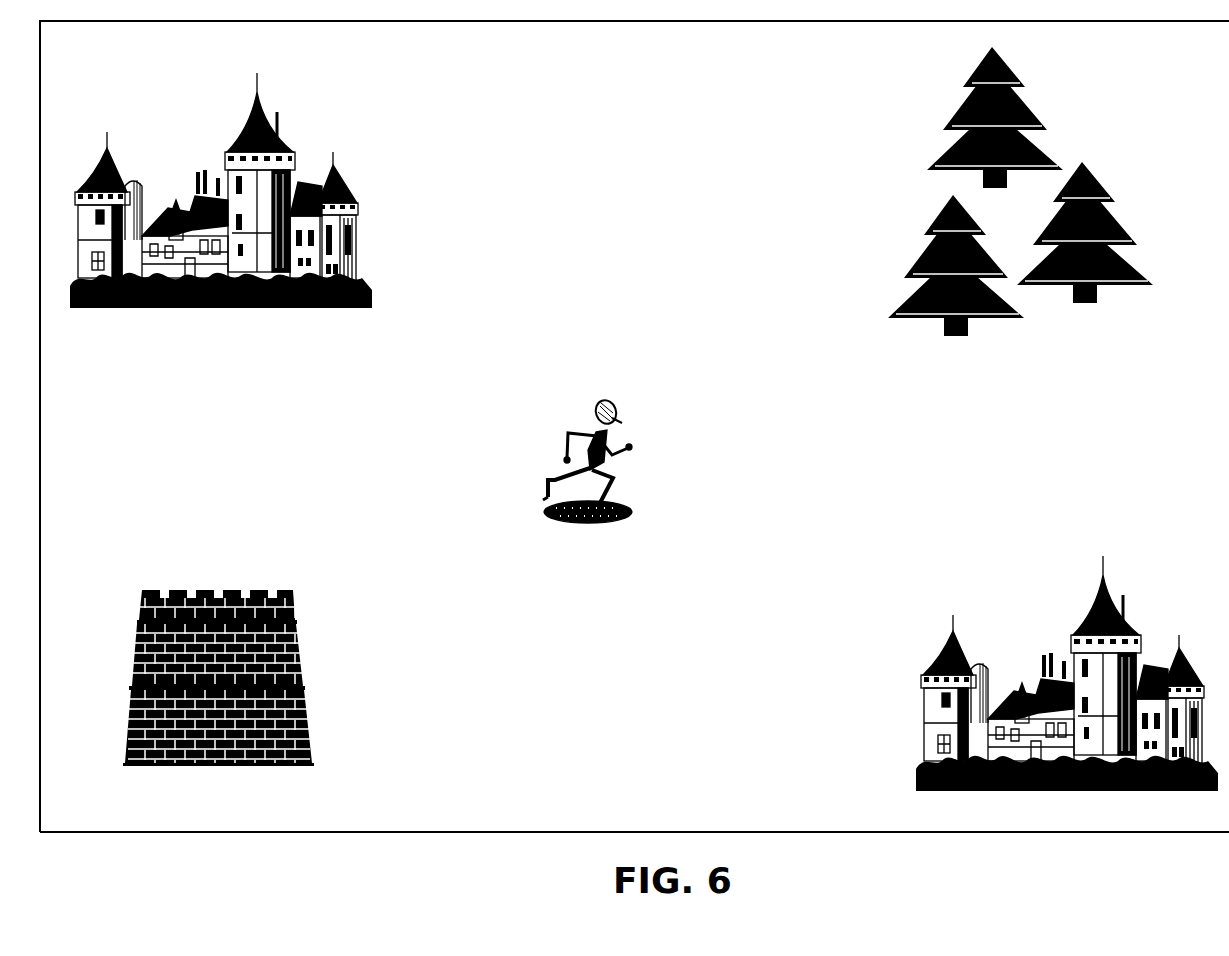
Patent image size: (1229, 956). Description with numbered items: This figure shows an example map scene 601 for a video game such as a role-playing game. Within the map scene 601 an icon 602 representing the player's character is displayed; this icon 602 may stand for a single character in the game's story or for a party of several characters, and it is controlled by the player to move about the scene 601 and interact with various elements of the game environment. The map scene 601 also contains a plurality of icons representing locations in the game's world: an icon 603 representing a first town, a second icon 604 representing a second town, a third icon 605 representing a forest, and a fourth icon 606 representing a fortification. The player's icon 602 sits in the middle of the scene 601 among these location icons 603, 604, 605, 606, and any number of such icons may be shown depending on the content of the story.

The map scene 601 is at (633, 728).
The icon representing the player's character 602 is at (618, 400).
The icon representing a first town 603 is at (377, 223).
The second icon representing a second town 604 is at (940, 622).
The third icon representing a forest 605 is at (922, 158).
The fourth icon representing a fortification 606 is at (287, 588).